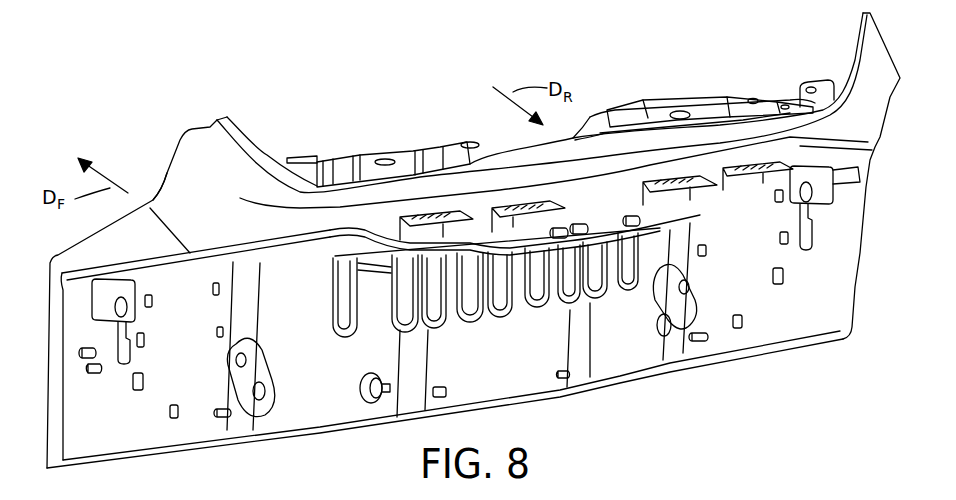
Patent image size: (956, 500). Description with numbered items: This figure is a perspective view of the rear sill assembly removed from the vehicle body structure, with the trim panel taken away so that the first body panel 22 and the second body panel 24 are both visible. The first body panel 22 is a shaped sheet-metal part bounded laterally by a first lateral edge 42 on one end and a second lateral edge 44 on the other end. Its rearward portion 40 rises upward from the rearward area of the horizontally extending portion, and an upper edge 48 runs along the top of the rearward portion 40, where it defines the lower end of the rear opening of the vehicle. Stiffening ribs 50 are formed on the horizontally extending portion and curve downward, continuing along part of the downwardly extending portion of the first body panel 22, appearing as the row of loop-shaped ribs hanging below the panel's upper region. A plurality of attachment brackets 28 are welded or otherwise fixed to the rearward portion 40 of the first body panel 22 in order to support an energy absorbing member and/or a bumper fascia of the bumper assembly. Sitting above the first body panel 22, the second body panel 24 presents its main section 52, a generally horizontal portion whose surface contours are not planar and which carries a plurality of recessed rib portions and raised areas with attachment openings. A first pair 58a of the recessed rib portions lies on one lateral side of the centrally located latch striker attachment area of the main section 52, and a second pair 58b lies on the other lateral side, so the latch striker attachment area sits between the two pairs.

The first body panel 22 is at (478, 234).
The second body panel 24 is at (697, 96).
The attachment brackets 28 is at (757, 200).
The rearward portion 40 is at (598, 203).
The first lateral edge 42 is at (167, 173).
The second lateral edge 44 is at (887, 50).
The upper edge 48 is at (252, 152).
The stiffening ribs 50 is at (565, 310).
The main section 52 is at (468, 157).
The first pair of recessed rib portions 58a is at (430, 146).
The second pair of recessed rib portions 58b is at (732, 122).